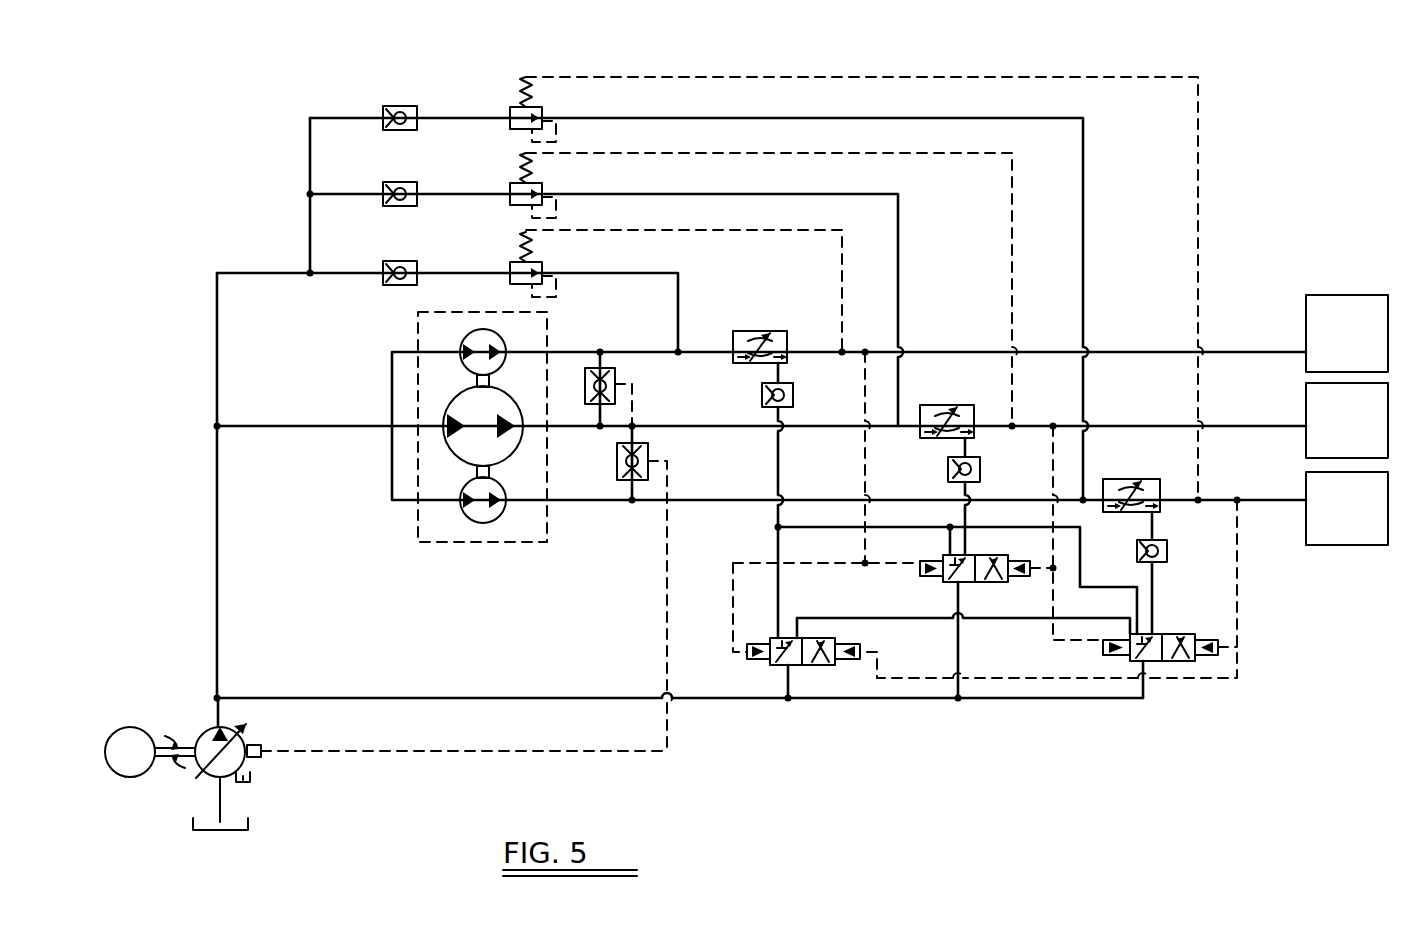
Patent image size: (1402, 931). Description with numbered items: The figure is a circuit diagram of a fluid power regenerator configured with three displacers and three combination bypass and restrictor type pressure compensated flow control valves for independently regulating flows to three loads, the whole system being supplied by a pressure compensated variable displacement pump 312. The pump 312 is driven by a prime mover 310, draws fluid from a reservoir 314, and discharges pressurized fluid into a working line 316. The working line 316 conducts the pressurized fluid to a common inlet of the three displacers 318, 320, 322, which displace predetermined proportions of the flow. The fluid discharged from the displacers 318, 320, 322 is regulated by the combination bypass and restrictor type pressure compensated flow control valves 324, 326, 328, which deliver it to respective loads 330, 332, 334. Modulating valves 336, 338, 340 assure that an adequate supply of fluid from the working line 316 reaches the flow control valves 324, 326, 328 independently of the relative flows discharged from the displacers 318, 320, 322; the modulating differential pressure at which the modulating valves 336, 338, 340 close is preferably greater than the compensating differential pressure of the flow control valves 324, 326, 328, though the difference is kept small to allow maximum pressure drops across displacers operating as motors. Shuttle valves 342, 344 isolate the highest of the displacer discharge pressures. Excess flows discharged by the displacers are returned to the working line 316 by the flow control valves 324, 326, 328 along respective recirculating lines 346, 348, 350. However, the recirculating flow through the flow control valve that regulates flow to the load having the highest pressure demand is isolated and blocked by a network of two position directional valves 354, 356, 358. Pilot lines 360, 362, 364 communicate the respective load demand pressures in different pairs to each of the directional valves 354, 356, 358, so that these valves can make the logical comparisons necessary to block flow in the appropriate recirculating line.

The prime mover 310 is at (116, 728).
The pressure compensated variable displacement pump 312 is at (238, 728).
The reservoir 314 is at (236, 828).
The working line 316 is at (217, 600).
The displacer 318 is at (474, 330).
The displacer 320 is at (443, 440).
The displacer 322 is at (479, 524).
The combination bypass and restrictor type pressure compensated flow control valve 324 is at (770, 330).
The combination bypass and restrictor type pressure compensated flow control valve 326 is at (952, 408).
The combination bypass and restrictor type pressure compensated flow control valve 328 is at (1135, 479).
The load 330 is at (1306, 320).
The load 332 is at (1306, 405).
The load 334 is at (1306, 520).
The modulating valve 336 is at (518, 262).
The modulating valve 338 is at (518, 183).
The modulating valve 340 is at (516, 107).
The shuttle valve 342 is at (618, 380).
The shuttle valve 344 is at (650, 459).
The recirculating line 346 is at (778, 466).
The recirculating line 348 is at (958, 667).
The recirculating line 350 is at (1028, 700).
The two position directional valve 354 is at (770, 662).
The two position directional valve 356 is at (930, 574).
The two position directional valve 358 is at (1181, 662).
The pilot line 360 is at (865, 452).
The pilot line 362 is at (1053, 446).
The pilot line 364 is at (1245, 614).